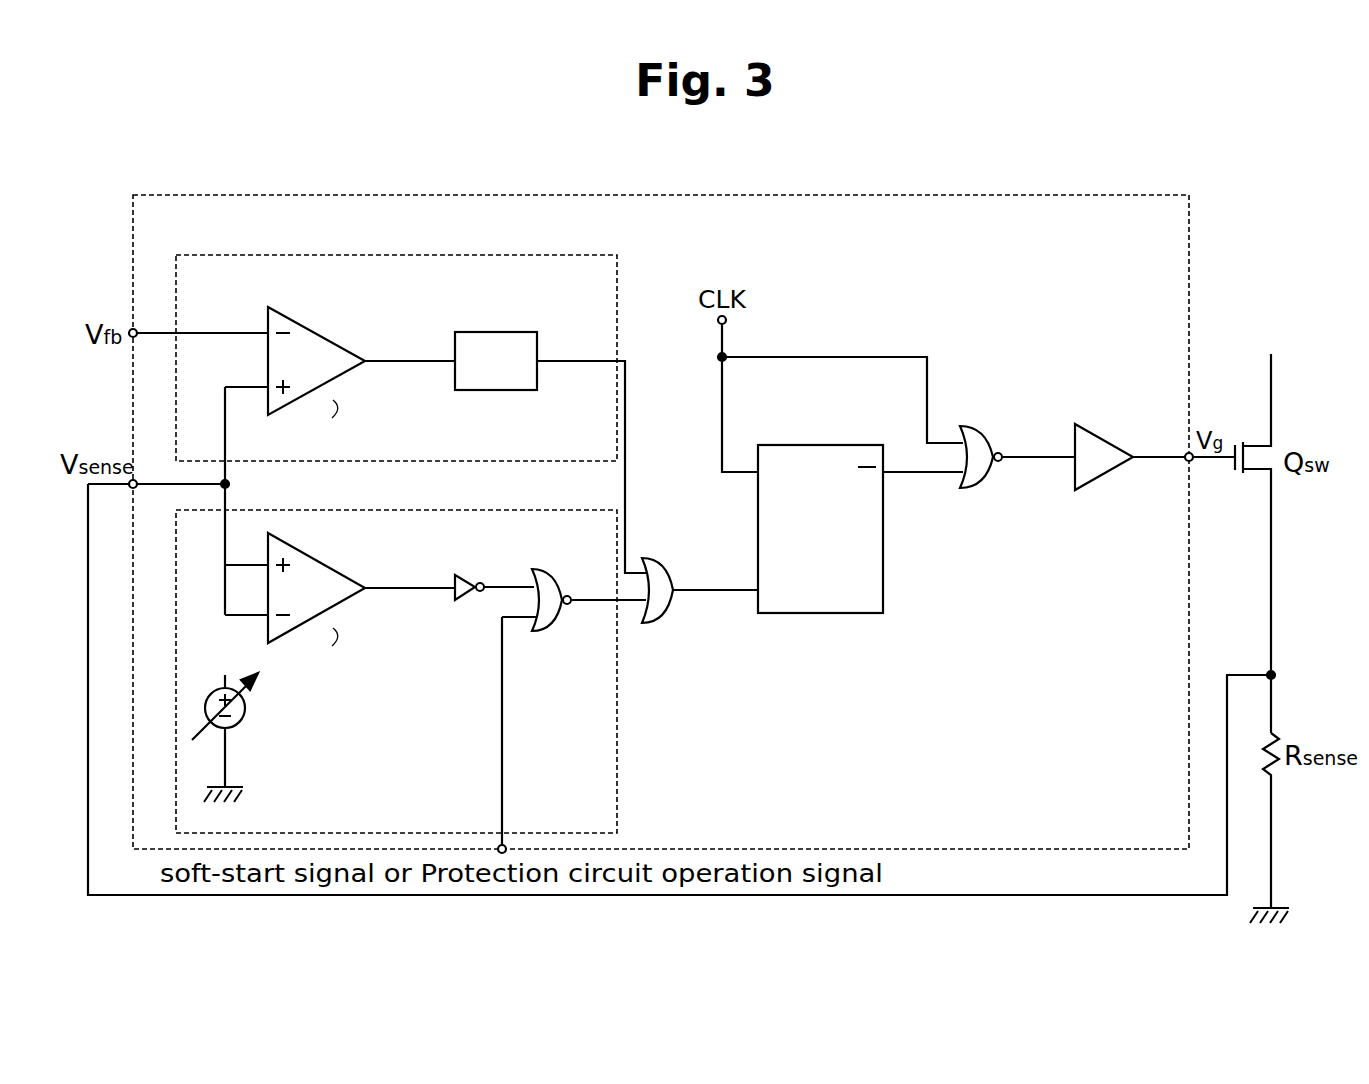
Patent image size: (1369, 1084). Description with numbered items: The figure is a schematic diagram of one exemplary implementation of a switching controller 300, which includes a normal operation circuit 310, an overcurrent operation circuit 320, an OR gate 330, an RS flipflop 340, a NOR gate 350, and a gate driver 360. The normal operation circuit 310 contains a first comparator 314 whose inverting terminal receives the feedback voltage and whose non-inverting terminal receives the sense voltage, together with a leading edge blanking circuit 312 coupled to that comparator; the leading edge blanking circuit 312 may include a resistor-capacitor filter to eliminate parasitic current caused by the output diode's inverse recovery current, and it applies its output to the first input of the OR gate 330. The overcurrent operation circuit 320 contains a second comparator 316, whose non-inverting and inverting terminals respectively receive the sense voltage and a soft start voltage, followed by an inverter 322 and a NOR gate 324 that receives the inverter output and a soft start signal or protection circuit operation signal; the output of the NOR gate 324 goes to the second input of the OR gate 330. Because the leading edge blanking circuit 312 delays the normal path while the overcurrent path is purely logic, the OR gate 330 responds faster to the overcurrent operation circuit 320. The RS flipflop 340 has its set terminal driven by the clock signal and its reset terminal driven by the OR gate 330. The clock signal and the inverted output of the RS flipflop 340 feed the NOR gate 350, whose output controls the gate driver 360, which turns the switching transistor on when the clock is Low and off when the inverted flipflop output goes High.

The switching controller 300 is at (778, 195).
The normal operation circuit 310 is at (462, 255).
The leading edge blanking (LEB) circuit 312 is at (505, 332).
The comparator CP1 314 is at (336, 342).
The comparator CP2 316 is at (322, 564).
The overcurrent operation circuit 320 is at (462, 510).
The inverter 322 is at (463, 575).
The NOR gate 324 is at (547, 573).
The OR gate 330 is at (658, 561).
The RS flipflop 340 is at (855, 445).
The NOR gate 350 is at (980, 430).
The gate driver 360 is at (1102, 436).